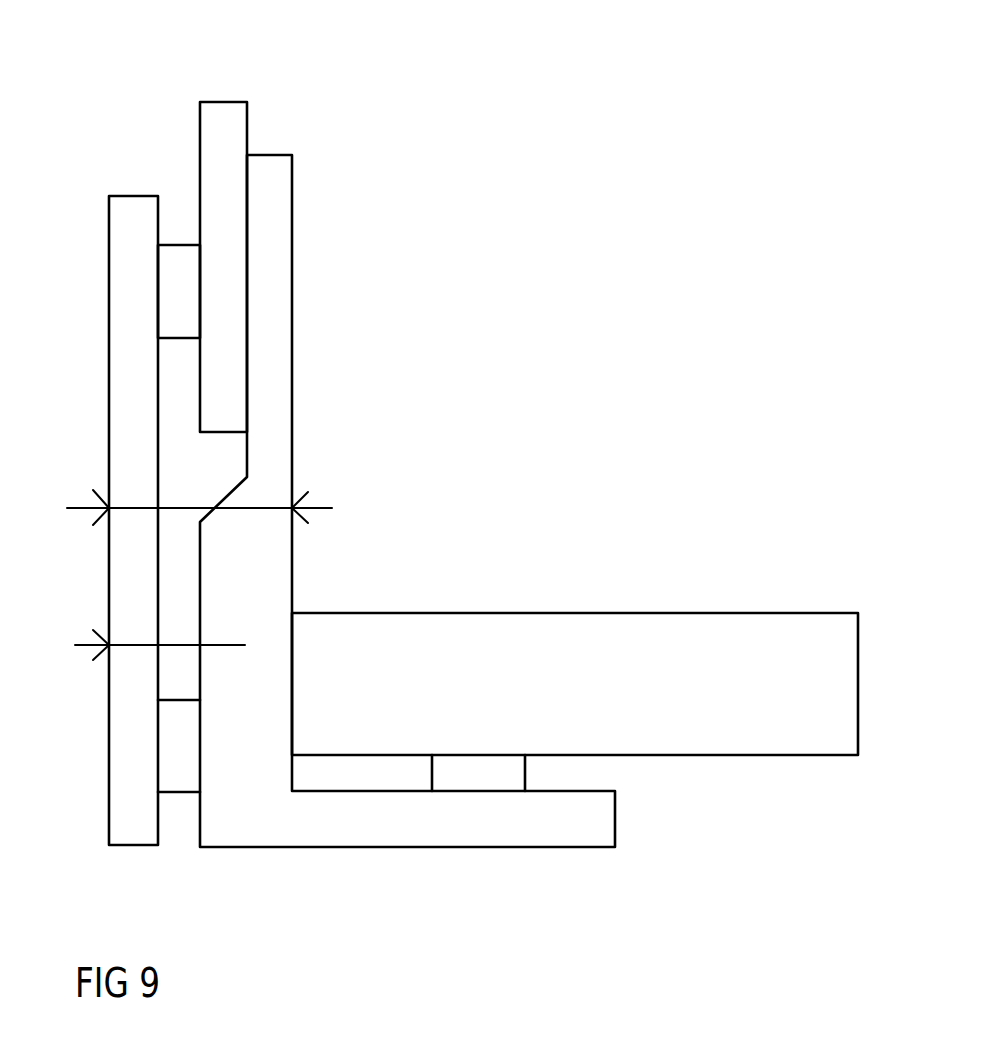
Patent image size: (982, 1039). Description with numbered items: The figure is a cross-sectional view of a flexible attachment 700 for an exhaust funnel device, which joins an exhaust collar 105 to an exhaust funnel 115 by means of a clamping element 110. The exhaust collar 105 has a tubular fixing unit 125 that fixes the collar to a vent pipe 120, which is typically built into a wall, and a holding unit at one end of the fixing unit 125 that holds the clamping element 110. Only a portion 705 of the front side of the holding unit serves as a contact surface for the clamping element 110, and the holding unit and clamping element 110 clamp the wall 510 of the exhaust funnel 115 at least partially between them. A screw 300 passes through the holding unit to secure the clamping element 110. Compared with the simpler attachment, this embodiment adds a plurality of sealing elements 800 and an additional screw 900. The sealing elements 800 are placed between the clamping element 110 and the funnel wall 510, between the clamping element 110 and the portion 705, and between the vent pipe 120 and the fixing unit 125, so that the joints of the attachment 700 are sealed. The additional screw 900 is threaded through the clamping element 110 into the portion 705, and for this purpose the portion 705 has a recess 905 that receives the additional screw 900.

The exhaust collar 105 is at (613, 815).
The clamping element 110 is at (130, 196).
The exhaust funnel 115 is at (228, 102).
The vent pipe 120 is at (686, 613).
The fixing unit 125 is at (358, 791).
The screw 300 is at (320, 508).
The wall 510 is at (200, 385).
The flexible attachment 700 is at (509, 262).
The portion 705 is at (200, 673).
The sealing elements 800 is at (175, 243).
The additional screw 900 is at (223, 645).
The recess 905 is at (198, 637).